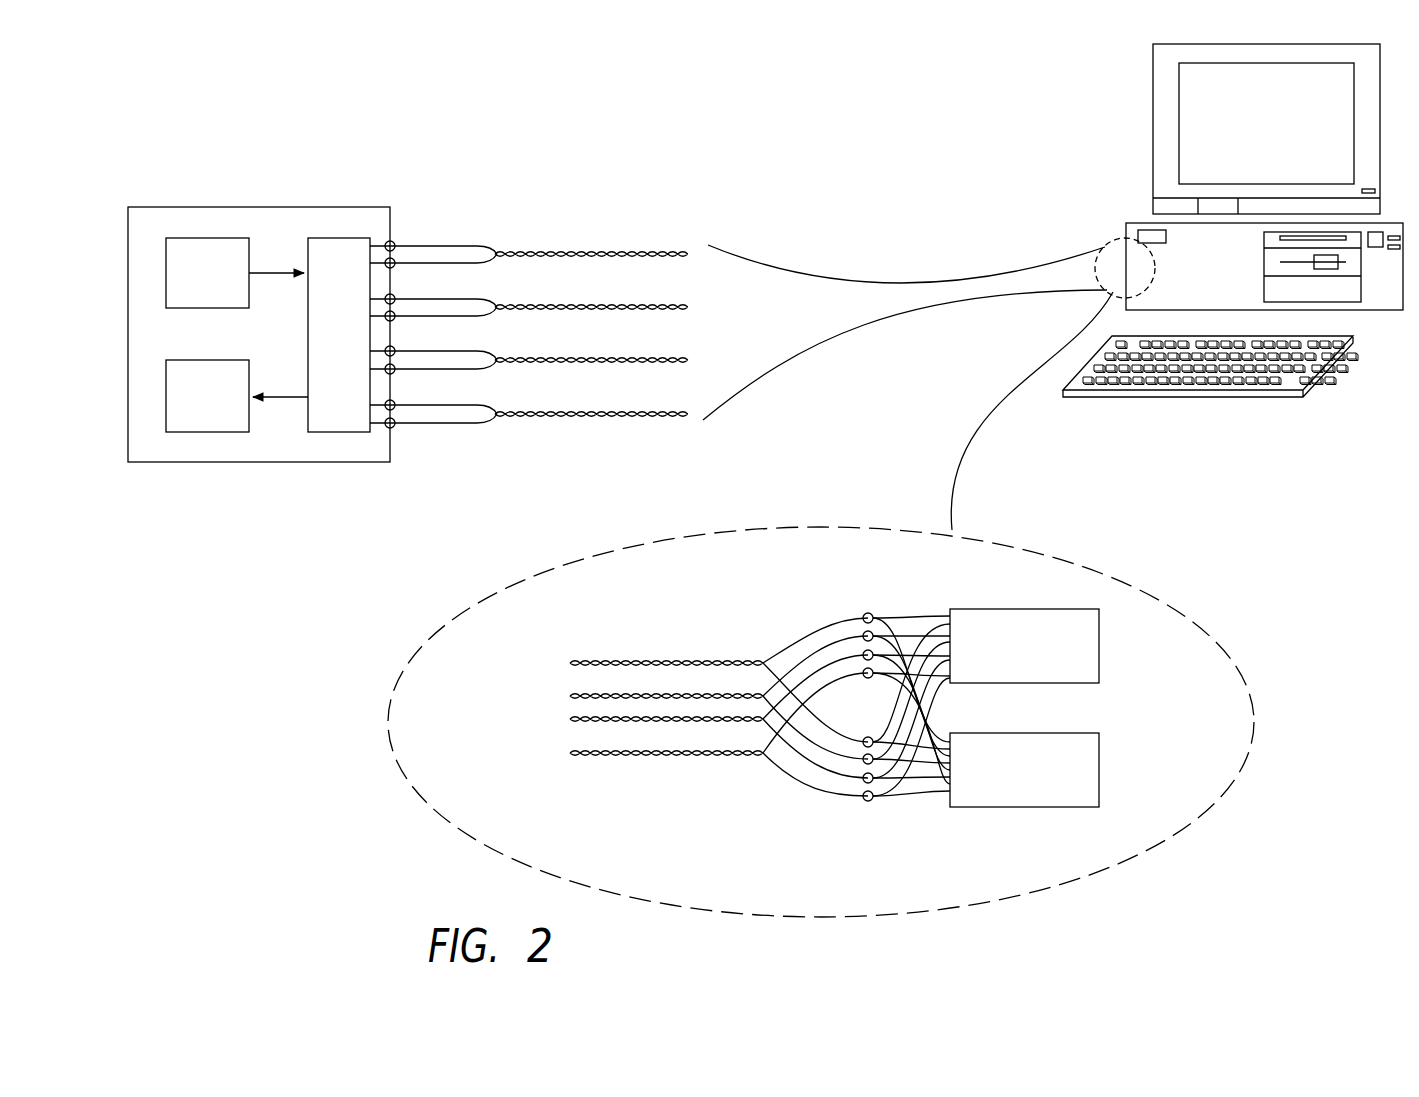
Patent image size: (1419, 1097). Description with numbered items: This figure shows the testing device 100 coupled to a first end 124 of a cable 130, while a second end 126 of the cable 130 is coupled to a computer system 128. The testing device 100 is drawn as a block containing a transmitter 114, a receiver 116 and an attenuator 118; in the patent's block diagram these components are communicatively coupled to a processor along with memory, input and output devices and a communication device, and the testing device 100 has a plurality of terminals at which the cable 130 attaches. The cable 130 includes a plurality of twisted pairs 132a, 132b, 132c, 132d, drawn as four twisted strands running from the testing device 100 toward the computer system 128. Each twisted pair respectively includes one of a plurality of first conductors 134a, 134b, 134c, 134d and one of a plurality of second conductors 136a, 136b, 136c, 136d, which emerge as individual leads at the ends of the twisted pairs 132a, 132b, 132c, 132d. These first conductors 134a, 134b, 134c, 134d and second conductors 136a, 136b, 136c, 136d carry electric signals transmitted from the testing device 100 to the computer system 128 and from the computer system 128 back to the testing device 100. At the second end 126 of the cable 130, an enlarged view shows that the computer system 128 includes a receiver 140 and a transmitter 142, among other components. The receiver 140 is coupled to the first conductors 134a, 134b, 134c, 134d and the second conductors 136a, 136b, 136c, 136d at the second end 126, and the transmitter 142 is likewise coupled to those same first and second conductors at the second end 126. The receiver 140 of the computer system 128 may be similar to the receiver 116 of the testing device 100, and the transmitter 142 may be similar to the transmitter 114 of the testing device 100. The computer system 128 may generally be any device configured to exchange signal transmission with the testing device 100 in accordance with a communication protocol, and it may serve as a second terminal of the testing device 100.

The testing device 100 is at (262, 207).
The transmitter 114 is at (208, 237).
The receiver 116 is at (208, 360).
The attenuator 118 is at (338, 237).
The first end 124 is at (367, 131).
The second end 126 is at (1096, 220).
The computer system 128 is at (1390, 312).
The cable 130 is at (893, 283).
The twisted pair 132a is at (568, 238).
The twisted pair 132b is at (607, 296).
The twisted pair 132c is at (607, 373).
The twisted pair 132d is at (568, 431).
The first conductor 134a is at (410, 245).
The first conductor 134b is at (445, 250).
The first conductor 134c is at (453, 370).
The first conductor 134d is at (430, 407).
The second conductor 136a is at (430, 262).
The second conductor 136b is at (455, 268).
The second conductor 136c is at (445, 425).
The second conductor 136d is at (410, 423).
The receiver 140 is at (1099, 646).
The transmitter 142 is at (1099, 770).